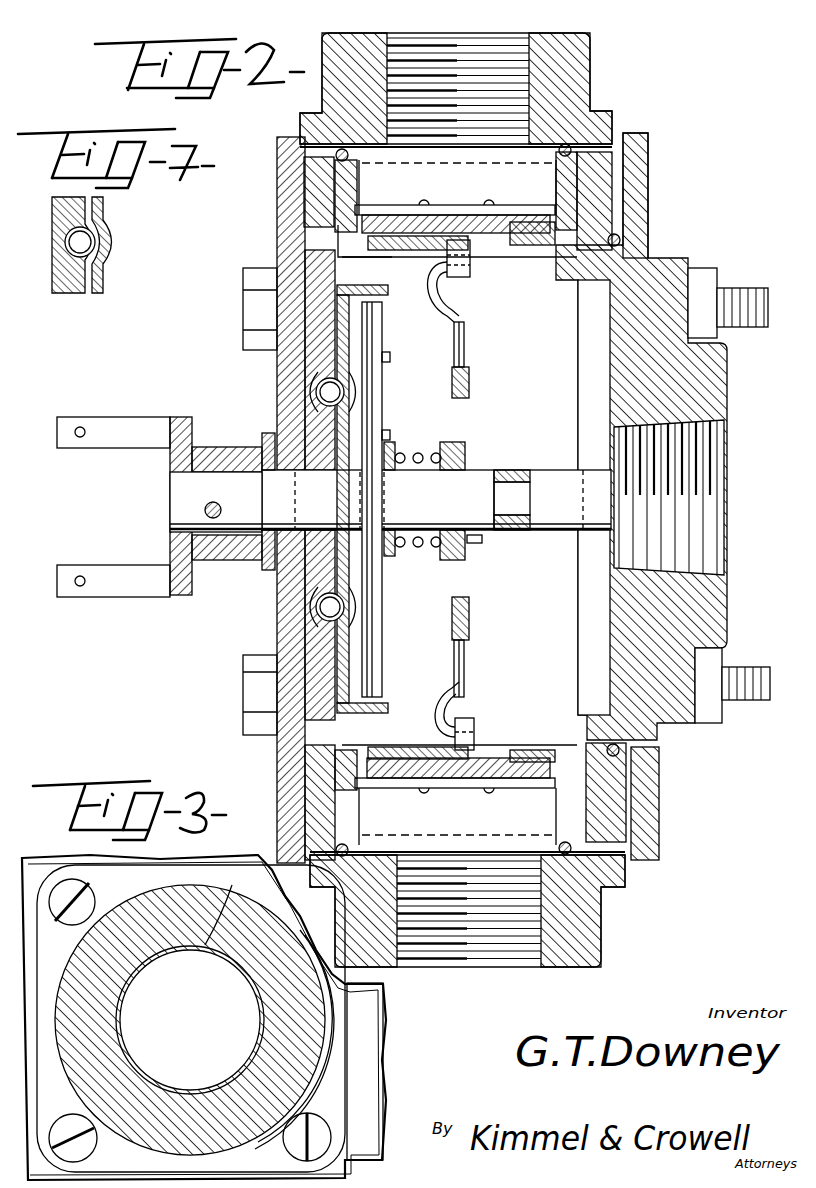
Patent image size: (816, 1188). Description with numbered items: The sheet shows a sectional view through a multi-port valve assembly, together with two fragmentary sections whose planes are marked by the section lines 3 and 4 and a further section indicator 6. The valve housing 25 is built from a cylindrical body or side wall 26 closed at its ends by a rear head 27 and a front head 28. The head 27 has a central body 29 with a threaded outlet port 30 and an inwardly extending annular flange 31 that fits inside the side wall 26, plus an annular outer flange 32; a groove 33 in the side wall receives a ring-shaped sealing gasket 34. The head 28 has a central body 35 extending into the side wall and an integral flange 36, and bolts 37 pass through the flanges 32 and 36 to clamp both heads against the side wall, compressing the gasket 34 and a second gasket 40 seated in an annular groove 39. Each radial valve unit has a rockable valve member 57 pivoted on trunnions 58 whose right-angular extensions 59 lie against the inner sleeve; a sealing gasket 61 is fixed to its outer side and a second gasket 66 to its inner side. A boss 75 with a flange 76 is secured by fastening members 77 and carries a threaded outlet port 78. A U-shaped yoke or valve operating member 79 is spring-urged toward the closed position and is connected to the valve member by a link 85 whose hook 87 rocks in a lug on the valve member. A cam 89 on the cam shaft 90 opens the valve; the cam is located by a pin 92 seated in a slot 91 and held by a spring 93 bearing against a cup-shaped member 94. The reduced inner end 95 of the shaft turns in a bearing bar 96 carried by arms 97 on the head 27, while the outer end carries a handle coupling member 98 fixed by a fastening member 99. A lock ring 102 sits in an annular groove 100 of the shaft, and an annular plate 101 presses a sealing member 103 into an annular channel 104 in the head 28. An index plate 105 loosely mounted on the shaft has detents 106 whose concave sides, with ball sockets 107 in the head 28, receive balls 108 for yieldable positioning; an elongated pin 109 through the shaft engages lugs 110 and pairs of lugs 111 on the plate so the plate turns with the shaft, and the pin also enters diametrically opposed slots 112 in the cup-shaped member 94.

In FIG. 2, the section line 3— 3 is at (315, 70).
In FIG. 2, the section line 4— 4 is at (297, 410).
In FIG. 2, the section line 6- 6 is at (262, 193).
In FIG. 2, the valve housing 25 is at (652, 230).
In FIG. 2, the cylindrical body 26 is at (585, 268).
In FIG. 2, the head 27 is at (672, 262).
In FIG. 2, the head 28 is at (272, 262).
In FIG. 2, the central body 29 is at (715, 388).
In FIG. 2, the threaded outlet port 30 is at (708, 452).
In FIG. 2, the inwardly extending annular flange 31 is at (592, 742).
In FIG. 2, the annular outer flange 32 is at (655, 815).
In FIG. 2, the annular groove 33 is at (628, 770).
In FIG. 2, the sealing gasket 34 is at (635, 752).
In FIG. 2, the central body 35 is at (308, 598).
In FIG. 2, the integral flange 36 is at (302, 772).
In FIG. 2, the bolts 37 is at (738, 290).
In FIG. 2, the annular groove 39 is at (305, 748).
In FIG. 2, the sealing gasket 40 is at (300, 790).
In FIG. 2, the valve member 57 is at (460, 214).
In FIG. 2, the trunnions 58 is at (462, 806).
In FIG. 2, the extensions 59 is at (540, 245).
In FIG. 2, the sealing gasket 61 is at (407, 213).
In FIG. 2, the second gasket 66 is at (437, 272).
In FIG. 2, the boss 75 is at (578, 64).
In FIG. 3, the boss 75 is at (128, 912).
In FIG. 2, the flange 76 is at (604, 128).
In FIG. 3, the flange 76 is at (345, 1042).
In FIG. 3, the fastening members 77 is at (70, 928).
In FIG. 2, the threaded outlet opening 78 is at (522, 38).
In FIG. 3, the threaded outlet opening 78 is at (222, 910).
In FIG. 2, the valve operating member 79 is at (472, 382).
In FIG. 2, the connecting bar 85 is at (466, 342).
In FIG. 2, the hook 87 is at (440, 300).
In FIG. 2, the cam 89 is at (465, 560).
In FIG. 2, the cam shaft 90 is at (506, 495).
In FIG. 2, the slot 91 is at (458, 440).
In FIG. 2, the pin 92 is at (484, 542).
In FIG. 2, the spring 93 is at (416, 452).
In FIG. 2, the cup-shaped member 94 is at (400, 552).
In FIG. 2, the reduced inner end portion 95 is at (522, 480).
In FIG. 2, the bearing bar 96 is at (548, 536).
In FIG. 2, the arms 97 is at (572, 520).
In FIG. 2, the handle coupling member 98 is at (200, 447).
In FIG. 2, the fastening member 99 is at (205, 510).
In FIG. 2, the annular groove 100 is at (262, 492).
In FIG. 2, the annular plate 101 is at (264, 564).
In FIG. 2, the lock ring 102 is at (262, 448).
In FIG. 2, the sealing member 103 is at (262, 598).
In FIG. 2, the annular channel 104 is at (336, 398).
In FIG. 2, the index plate 105 is at (385, 692).
In FIG. 2, the detents 106 is at (345, 618).
In FIG. 4, the detents 106 is at (108, 254).
In FIG. 2, the ball sockets 107 is at (322, 628).
In FIG. 4, the ball sockets 107 is at (55, 258).
In FIG. 2, the balls 108 is at (318, 386).
In FIG. 4, the balls 108 is at (72, 236).
In FIG. 2, the elongated pin 109 is at (383, 660).
In FIG. 2, the lugs 110 is at (366, 286).
In FIG. 2, the inwardly projecting lugs 111 is at (420, 358).
In FIG. 2, the slots 112 is at (386, 440).